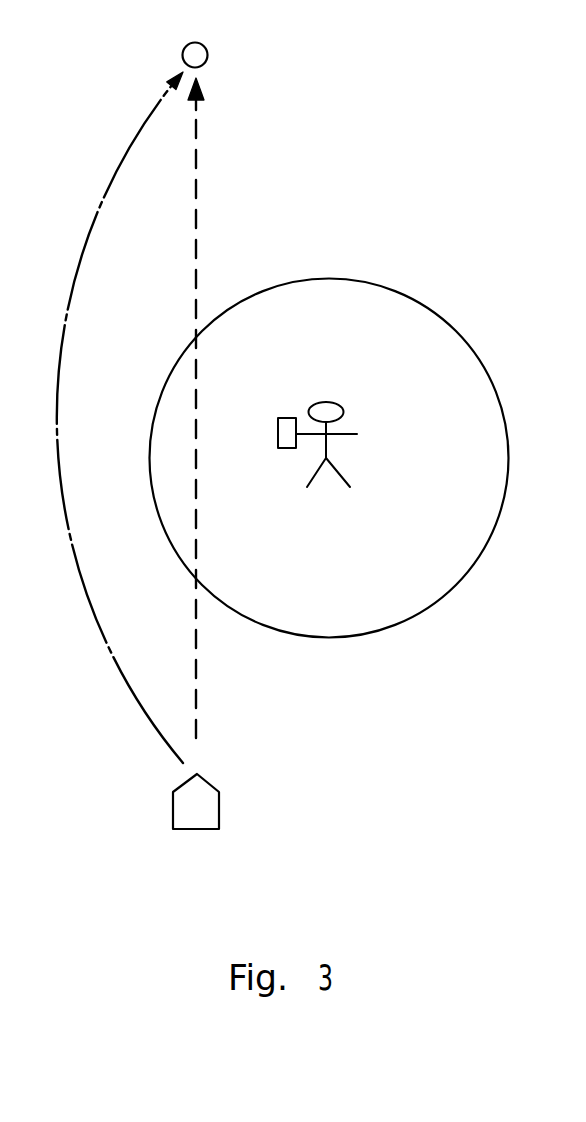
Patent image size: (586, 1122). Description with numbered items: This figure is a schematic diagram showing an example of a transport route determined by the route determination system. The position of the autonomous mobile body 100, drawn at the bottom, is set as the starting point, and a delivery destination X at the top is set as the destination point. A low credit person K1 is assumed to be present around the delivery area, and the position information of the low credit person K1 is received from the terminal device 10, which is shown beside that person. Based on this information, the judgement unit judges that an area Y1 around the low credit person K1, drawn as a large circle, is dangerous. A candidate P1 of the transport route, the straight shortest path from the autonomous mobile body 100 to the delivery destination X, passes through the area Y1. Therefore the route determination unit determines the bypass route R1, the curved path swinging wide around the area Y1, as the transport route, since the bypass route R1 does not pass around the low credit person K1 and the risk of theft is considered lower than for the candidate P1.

The delivery destination X is at (204, 46).
The bypass route R1 is at (100, 208).
The candidate of the transport route P1 is at (198, 188).
The area Y1 is at (460, 335).
The low credit person K1 is at (357, 434).
The terminal device 10 is at (287, 418).
The autonomous mobile body 100 is at (197, 831).